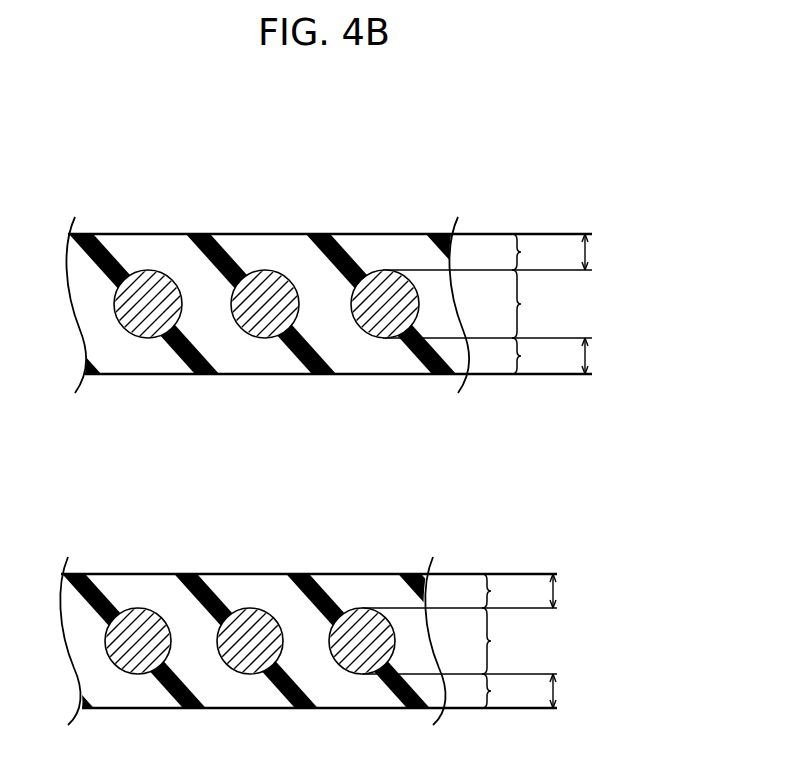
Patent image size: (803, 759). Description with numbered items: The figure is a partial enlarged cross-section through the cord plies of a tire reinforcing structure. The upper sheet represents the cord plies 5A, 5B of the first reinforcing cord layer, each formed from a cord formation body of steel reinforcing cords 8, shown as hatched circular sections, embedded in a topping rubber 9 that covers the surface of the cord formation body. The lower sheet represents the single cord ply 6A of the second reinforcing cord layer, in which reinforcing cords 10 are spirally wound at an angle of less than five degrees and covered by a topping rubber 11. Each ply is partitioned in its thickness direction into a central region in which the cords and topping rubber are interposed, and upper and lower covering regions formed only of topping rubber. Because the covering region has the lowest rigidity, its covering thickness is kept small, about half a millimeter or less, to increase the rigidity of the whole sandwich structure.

The cord ply 5A is at (337, 239).
The cord ply 5B is at (337, 239).
The cord ply 6A is at (319, 577).
The reinforcing cords 8 is at (147, 303).
The topping rubber 9 is at (258, 253).
The reinforcing cords 10 is at (137, 640).
The topping rubber 11 is at (243, 592).